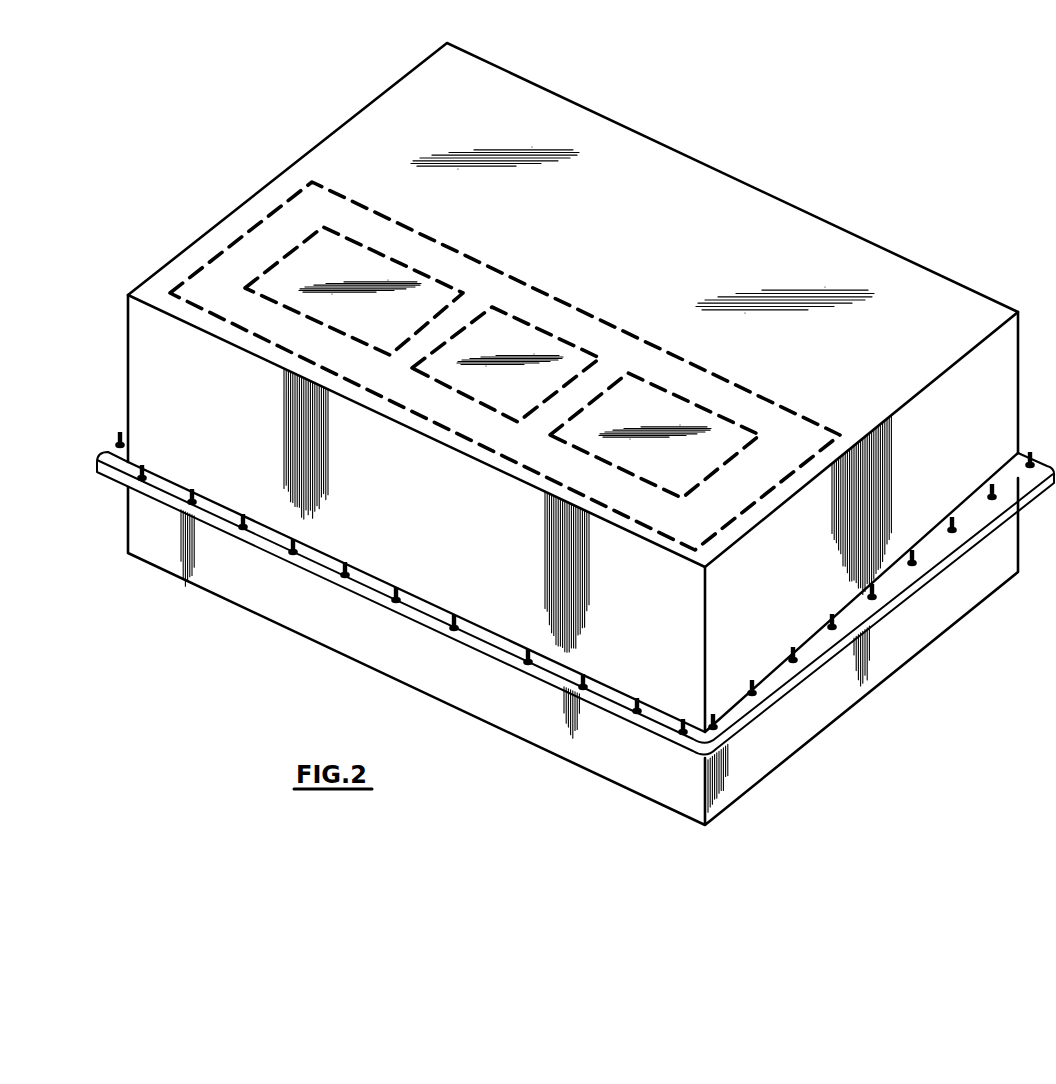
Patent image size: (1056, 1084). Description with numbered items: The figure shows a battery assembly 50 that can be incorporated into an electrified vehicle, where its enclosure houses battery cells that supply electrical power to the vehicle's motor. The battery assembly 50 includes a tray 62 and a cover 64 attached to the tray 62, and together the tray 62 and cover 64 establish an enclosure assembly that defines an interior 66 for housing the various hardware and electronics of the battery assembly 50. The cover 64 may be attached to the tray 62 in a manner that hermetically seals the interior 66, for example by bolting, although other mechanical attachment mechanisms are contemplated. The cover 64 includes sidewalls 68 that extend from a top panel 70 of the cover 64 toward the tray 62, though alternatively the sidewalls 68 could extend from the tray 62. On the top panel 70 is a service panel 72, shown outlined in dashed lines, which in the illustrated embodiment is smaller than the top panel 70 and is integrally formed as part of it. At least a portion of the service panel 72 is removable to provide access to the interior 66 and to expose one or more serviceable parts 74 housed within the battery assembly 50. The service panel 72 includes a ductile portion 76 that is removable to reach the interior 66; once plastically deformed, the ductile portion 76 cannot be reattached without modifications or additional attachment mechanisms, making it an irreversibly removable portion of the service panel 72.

The battery assembly 50 is at (880, 131).
The tray 62 is at (955, 601).
The cover 64 is at (703, 212).
The interior 66 is at (350, 630).
The sidewalls 68 is at (897, 478).
The top panel 70 is at (684, 266).
The service panel 72 is at (818, 413).
The serviceable parts 74 is at (315, 326).
The ductile portion 76 is at (228, 246).